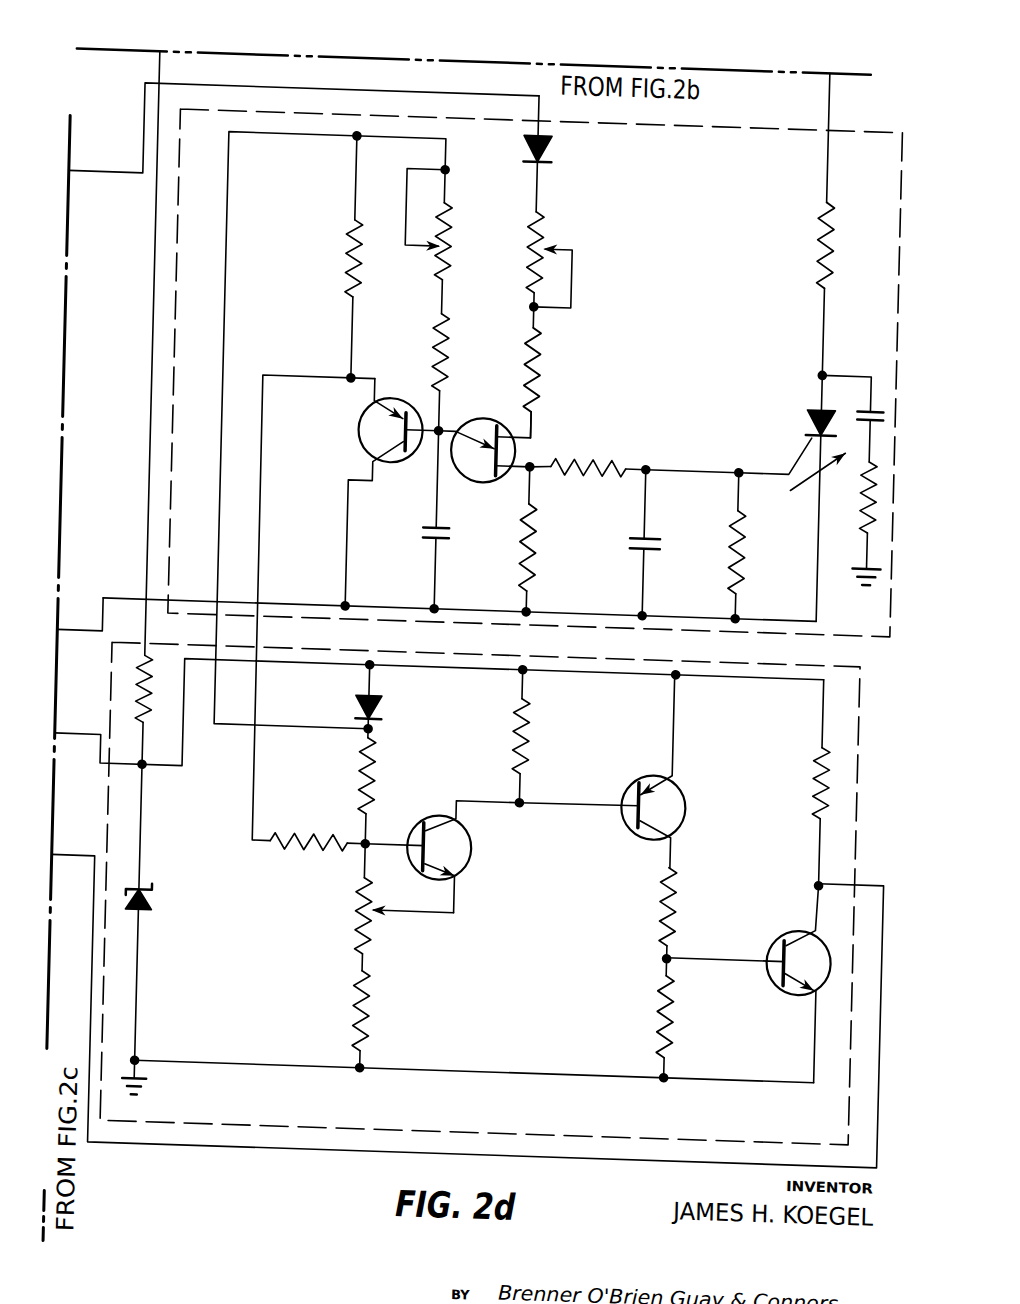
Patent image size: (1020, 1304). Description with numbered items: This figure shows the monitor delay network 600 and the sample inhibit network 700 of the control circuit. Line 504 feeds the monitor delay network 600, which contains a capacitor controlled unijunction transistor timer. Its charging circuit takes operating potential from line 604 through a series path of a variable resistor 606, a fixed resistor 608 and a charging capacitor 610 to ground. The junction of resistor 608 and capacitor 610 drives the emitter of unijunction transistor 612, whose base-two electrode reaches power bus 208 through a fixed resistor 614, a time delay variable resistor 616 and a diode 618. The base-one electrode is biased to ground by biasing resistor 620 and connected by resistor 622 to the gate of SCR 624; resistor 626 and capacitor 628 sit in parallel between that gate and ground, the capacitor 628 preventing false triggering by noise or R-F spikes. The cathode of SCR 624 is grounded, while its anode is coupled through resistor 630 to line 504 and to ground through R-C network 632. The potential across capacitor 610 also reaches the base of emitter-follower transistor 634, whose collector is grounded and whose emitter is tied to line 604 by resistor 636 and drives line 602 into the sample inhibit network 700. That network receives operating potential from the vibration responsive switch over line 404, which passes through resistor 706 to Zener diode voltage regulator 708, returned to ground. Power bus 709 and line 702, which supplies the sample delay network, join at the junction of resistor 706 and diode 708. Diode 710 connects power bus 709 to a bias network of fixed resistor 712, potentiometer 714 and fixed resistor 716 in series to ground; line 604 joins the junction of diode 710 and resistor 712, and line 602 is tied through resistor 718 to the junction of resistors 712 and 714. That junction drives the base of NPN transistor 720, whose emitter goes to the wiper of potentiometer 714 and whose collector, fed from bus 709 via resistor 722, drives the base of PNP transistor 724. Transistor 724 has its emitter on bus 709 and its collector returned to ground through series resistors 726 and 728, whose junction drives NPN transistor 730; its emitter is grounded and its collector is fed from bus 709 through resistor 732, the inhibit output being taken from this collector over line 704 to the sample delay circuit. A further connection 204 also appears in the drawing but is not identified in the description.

The line 404 is at (156, 70).
The power bus 208 is at (95, 168).
The common return line 204 is at (95, 622).
The line 504 is at (832, 66).
The monitor delay network 600 is at (703, 102).
The line 602 is at (274, 624).
The line 604 is at (287, 123).
The variable resistor 606 is at (457, 235).
The fixed resistor 608 is at (464, 356).
The charging capacitor 610 is at (436, 525).
The unijunction transistor 612 is at (482, 466).
The fixed resistor 614 is at (554, 347).
The time delay variable resistor 616 is at (553, 214).
The diode 618 is at (556, 130).
The biasing resistor 620 is at (533, 530).
The resistor 622 is at (590, 443).
The SCR 624 is at (816, 395).
The resistor 626 is at (758, 521).
The capacitor 628 is at (642, 527).
The resistor 630 is at (823, 219).
The R-C network 632 is at (806, 489).
The emitter-follower transistor 634 is at (372, 430).
The resistor 636 is at (352, 256).
The sample inhibit network 700 is at (876, 792).
The line 702 is at (84, 730).
The line 704 is at (91, 853).
The resistor 706 is at (169, 725).
The Zener diode voltage regulator 708 is at (175, 898).
The power bus 709 is at (352, 652).
The diode 710 is at (400, 688).
The fixed resistor 712 is at (395, 762).
The potentiometer 714 is at (378, 908).
The fixed resistor 716 is at (378, 1003).
The resistor 718 is at (323, 838).
The NPN transistor 720 is at (490, 844).
The resistor 722 is at (547, 718).
The PNP transistor 724 is at (705, 775).
The resistor 726 is at (682, 884).
The resistor 728 is at (681, 999).
The NPN transistor 730 is at (798, 915).
The resistor 732 is at (832, 756).